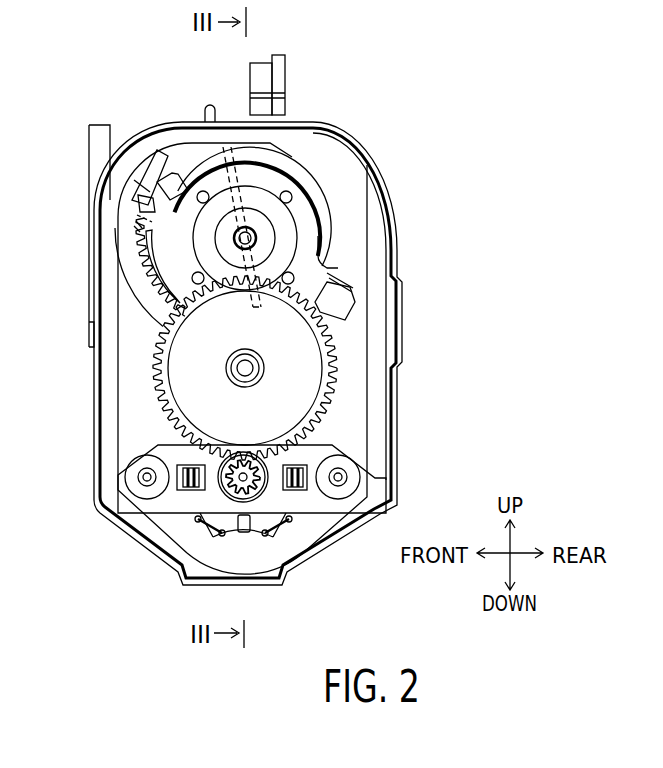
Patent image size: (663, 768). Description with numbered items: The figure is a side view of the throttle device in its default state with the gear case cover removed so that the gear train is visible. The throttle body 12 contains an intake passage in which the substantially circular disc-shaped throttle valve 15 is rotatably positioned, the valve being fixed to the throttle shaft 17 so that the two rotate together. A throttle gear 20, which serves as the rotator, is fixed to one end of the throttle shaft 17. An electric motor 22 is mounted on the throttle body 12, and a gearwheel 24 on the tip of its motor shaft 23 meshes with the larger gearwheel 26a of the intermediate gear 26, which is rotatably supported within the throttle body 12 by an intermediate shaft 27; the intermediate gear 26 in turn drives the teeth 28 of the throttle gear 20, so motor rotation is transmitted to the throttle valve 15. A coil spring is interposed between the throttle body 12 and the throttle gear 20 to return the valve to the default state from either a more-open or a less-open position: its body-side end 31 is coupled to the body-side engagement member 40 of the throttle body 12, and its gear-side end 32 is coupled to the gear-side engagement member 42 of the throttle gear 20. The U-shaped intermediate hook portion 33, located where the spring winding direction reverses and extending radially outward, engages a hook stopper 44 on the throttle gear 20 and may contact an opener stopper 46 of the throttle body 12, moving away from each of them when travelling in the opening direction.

The throttle body 12 is at (365, 146).
The throttle valve 15 is at (250, 197).
The throttle shaft 17 is at (258, 238).
The throttle gear 20 is at (305, 210).
The electric motor 22 is at (150, 447).
The motor shaft 23 is at (226, 494).
The gearwheel 24 is at (261, 494).
The intermediate gear 26 is at (310, 368).
The larger gearwheel 26a is at (328, 388).
The intermediate shaft 27 is at (238, 368).
The teeth 28 is at (140, 276).
The body-side end 31 is at (350, 294).
The gear-side end 32 is at (137, 216).
The intermediate hook portion 33 is at (145, 190).
The body-side engagement member 40 is at (340, 278).
The gear-side engagement member 42 is at (138, 224).
The hook stopper 44 is at (170, 197).
The opener stopper 46 is at (148, 180).